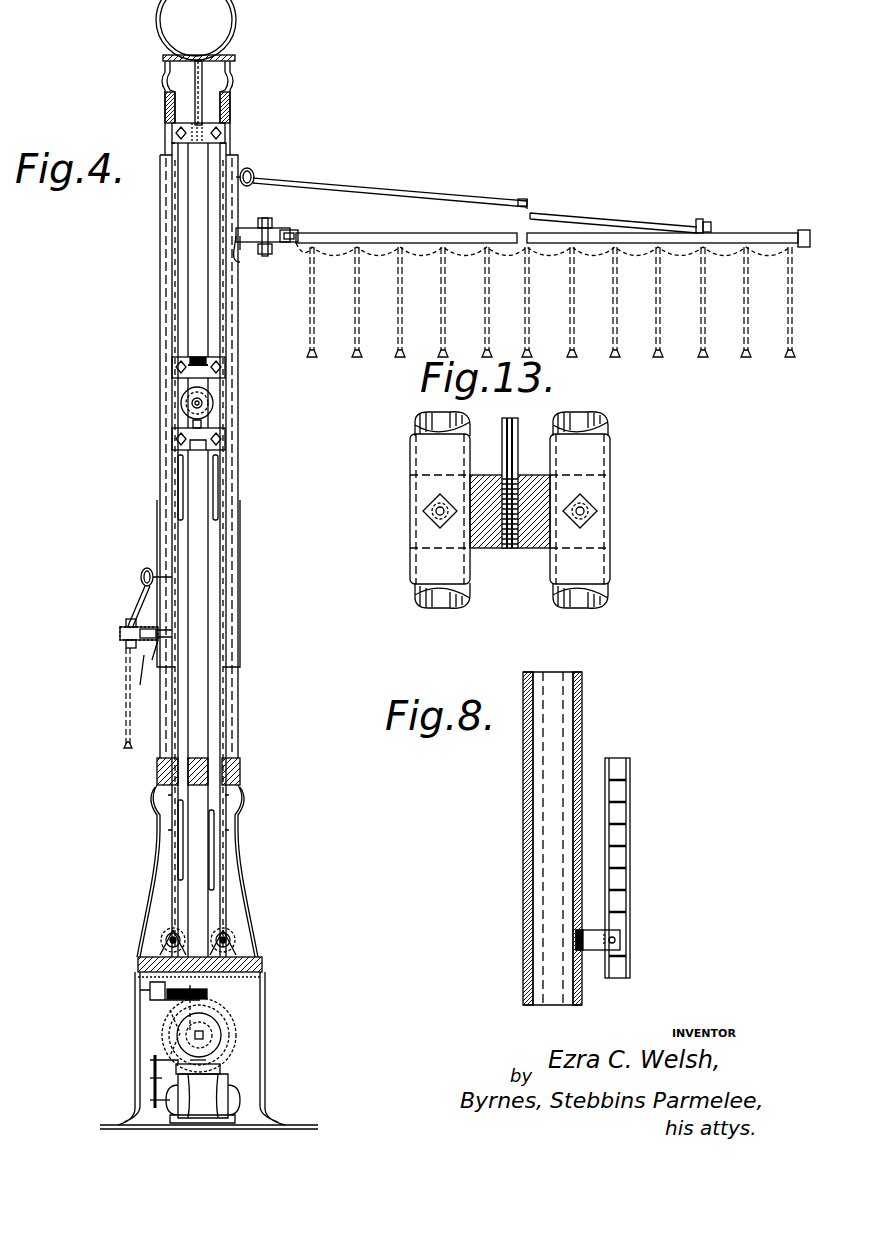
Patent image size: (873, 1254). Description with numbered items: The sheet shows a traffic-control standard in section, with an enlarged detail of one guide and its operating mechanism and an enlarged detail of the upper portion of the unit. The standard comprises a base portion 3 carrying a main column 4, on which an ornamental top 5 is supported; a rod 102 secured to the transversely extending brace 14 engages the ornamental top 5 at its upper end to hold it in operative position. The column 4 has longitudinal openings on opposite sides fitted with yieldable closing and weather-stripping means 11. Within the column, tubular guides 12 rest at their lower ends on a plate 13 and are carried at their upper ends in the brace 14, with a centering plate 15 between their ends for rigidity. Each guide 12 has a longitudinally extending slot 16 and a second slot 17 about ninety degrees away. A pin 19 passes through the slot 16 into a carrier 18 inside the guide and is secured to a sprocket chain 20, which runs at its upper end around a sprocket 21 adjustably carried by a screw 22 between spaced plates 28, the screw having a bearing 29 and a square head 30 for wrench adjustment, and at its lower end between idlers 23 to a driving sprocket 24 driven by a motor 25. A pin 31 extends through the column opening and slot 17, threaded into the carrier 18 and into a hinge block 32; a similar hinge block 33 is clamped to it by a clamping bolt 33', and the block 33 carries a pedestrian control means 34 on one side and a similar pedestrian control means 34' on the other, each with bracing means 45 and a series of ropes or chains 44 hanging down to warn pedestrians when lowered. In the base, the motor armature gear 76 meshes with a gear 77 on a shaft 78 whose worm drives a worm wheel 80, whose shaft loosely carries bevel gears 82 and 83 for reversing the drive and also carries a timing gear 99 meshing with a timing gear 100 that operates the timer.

In FIG. 4, the base portion 3 is at (265, 1020).
In FIG. 4, the main column 4 is at (230, 106).
In FIG. 4, the ornamental top 5 is at (238, 24).
In FIG. 4, the yieldable closing and weather-stripping means 11 is at (162, 503).
In FIG. 4, the tubular guides 12 is at (178, 220).
In FIG. 13, the tubular guides 12 is at (425, 458).
In FIG. 4, the plate 13 is at (256, 958).
In FIG. 4, the transversely extending brace 14 is at (220, 132).
In FIG. 13, the transversely extending brace 14 is at (490, 545).
In FIG. 4, the centering plate 15 is at (232, 760).
In FIG. 4, the longitudinally extending slot 16 is at (213, 862).
In FIG. 8, the longitudinally extending slot 16 is at (583, 720).
In FIG. 8, the second slot 17 is at (568, 672).
In FIG. 4, the carrier 18 is at (236, 152).
In FIG. 13, the carrier 18 is at (412, 427).
In FIG. 8, the carrier 18 is at (583, 685).
In FIG. 4, the pin 19 is at (222, 475).
In FIG. 8, the pin 19 is at (590, 930).
In FIG. 4, the sprocket chain 20 is at (209, 722).
In FIG. 8, the sprocket chain 20 is at (632, 888).
In FIG. 4, the sprocket 21 is at (205, 400).
In FIG. 4, the screw 22 is at (200, 424).
In FIG. 4, the idlers 23 is at (160, 940).
In FIG. 4, the driving sprocket 24 is at (236, 1043).
In FIG. 4, the motor 25 is at (240, 1098).
In FIG. 4, the spaced plates 28 is at (175, 441).
In FIG. 4, the bearing 29 is at (222, 365).
In FIG. 4, the square head 30 is at (200, 376).
In FIG. 4, the pin 31 is at (240, 262).
In FIG. 4, the hinge block 32 is at (243, 228).
In FIG. 4, the hinge block 33 is at (203, 439).
In FIG. 4, the clamping bolt 33' is at (194, 422).
In FIG. 4, the pedestrian control means 34 is at (117, 636).
In FIG. 4, the pedestrian control means 34' is at (553, 226).
In FIG. 4, the ropes or chains 44 is at (527, 322).
In FIG. 4, the bracing means 45 is at (432, 196).
In FIG. 4, the gear 76 is at (155, 1100).
In FIG. 4, the gear 77 is at (155, 1060).
In FIG. 4, the shaft 78 is at (155, 1078).
In FIG. 4, the worm wheel 80 is at (170, 1035).
In FIG. 4, the bevel gear 82 is at (210, 1062).
In FIG. 4, the bevel gear 83 is at (222, 1000).
In FIG. 4, the timing gear 99 is at (207, 992).
In FIG. 4, the timing gear 100 is at (165, 996).
In FIG. 4, the rod 102 is at (203, 80).
In FIG. 13, the rod 102 is at (518, 418).